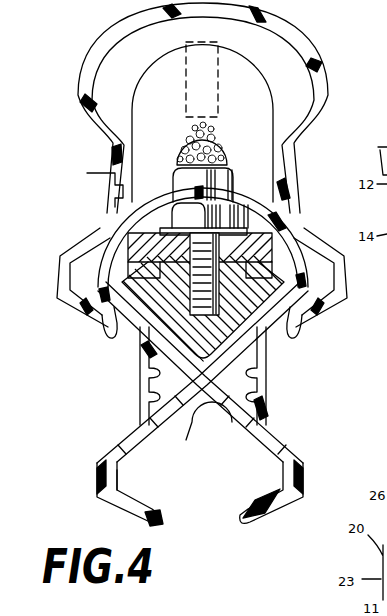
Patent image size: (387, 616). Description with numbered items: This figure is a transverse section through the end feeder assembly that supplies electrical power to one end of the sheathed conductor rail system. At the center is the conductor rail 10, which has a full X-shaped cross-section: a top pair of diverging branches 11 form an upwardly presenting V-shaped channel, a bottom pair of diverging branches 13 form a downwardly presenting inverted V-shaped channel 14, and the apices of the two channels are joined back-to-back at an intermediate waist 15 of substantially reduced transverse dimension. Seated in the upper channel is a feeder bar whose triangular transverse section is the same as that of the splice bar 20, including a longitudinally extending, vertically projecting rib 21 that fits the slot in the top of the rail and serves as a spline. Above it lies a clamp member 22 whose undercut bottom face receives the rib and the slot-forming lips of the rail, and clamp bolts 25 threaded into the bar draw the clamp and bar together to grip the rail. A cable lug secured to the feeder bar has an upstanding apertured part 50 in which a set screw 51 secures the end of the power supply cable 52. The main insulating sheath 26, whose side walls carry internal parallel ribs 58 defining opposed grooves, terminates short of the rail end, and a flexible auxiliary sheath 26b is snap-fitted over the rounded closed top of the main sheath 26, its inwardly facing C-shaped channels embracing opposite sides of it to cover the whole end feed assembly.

The conductor rail 10 is at (252, 353).
The top pair of diverging branches 11 is at (143, 322).
The bottom pair of diverging branches 13 is at (150, 432).
The inverted V-shaped channel 14 is at (178, 423).
The waist 15 is at (206, 382).
The splice bar 20 is at (295, 292).
The vertically projecting rib 21 is at (223, 268).
The clamp member 22 is at (240, 247).
The clamp bolts 25 is at (228, 204).
The insulating sheath 26 is at (162, 198).
The auxiliary sheath 26b is at (302, 44).
The upstanding apertured part 50 is at (257, 97).
The set screw 51 is at (197, 42).
The power supply cable 52 is at (187, 131).
The parallel ribs 58 is at (123, 197).